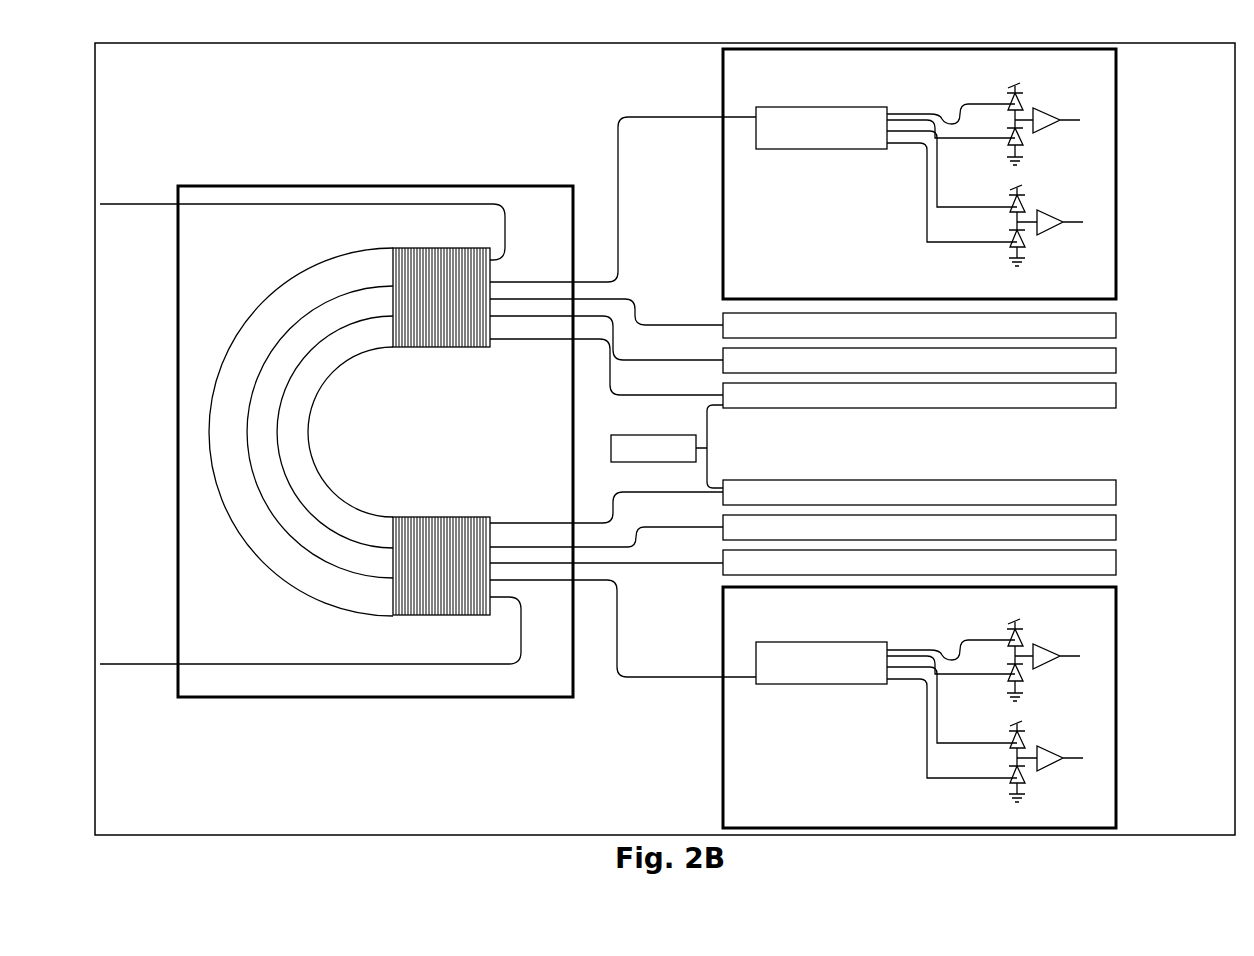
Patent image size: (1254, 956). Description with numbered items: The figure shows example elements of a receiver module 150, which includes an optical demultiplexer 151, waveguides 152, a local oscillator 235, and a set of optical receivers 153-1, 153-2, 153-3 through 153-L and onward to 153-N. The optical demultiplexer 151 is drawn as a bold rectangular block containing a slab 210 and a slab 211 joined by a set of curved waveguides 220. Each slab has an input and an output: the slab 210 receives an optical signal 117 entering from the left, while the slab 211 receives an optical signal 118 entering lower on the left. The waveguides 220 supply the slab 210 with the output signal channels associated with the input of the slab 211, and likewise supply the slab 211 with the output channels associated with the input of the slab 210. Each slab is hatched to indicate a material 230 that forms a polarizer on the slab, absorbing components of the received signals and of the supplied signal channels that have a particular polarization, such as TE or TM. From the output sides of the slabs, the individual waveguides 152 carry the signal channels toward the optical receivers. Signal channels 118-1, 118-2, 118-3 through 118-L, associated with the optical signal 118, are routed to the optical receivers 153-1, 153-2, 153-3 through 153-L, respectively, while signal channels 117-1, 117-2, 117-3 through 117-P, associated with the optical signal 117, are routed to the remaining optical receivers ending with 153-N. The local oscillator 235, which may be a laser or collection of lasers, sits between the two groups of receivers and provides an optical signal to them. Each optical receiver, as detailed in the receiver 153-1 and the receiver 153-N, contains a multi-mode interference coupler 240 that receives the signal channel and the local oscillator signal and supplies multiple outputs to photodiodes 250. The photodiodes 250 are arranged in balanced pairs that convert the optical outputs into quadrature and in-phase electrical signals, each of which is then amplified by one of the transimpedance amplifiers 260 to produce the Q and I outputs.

The receiver module 150 is at (146, 67).
The optical demultiplexer 151 is at (374, 180).
The waveguides 152 is at (587, 744).
The optical signal 117 is at (130, 204).
The optical signal 118 is at (155, 665).
The waveguides 220 is at (270, 265).
The slab 210 is at (403, 354).
The slab 211 is at (422, 510).
The material 230 is at (432, 262).
The signal channel 118-1 is at (617, 141).
The signal channel 118-2 is at (634, 300).
The signal channel 118-3 is at (686, 361).
The signal channel 118-L is at (541, 340).
The signal channel 117-1 is at (585, 522).
The signal channel 117-2 is at (667, 504).
The signal channel 117-3 is at (682, 564).
The signal channel 117-P is at (658, 680).
The local oscillator 235 is at (667, 446).
The optical receiver 153-1 is at (1117, 153).
The optical receiver 153-2 is at (1116, 326).
The optical receiver 153-3 is at (1116, 361).
The optical receiver 153-L is at (1116, 396).
The optical receiver 153-N is at (1117, 700).
The multi-mode interference coupler 240 is at (807, 680).
The photodiodes 250 is at (1010, 245).
The transimpedance amplifiers 260 is at (1048, 112).